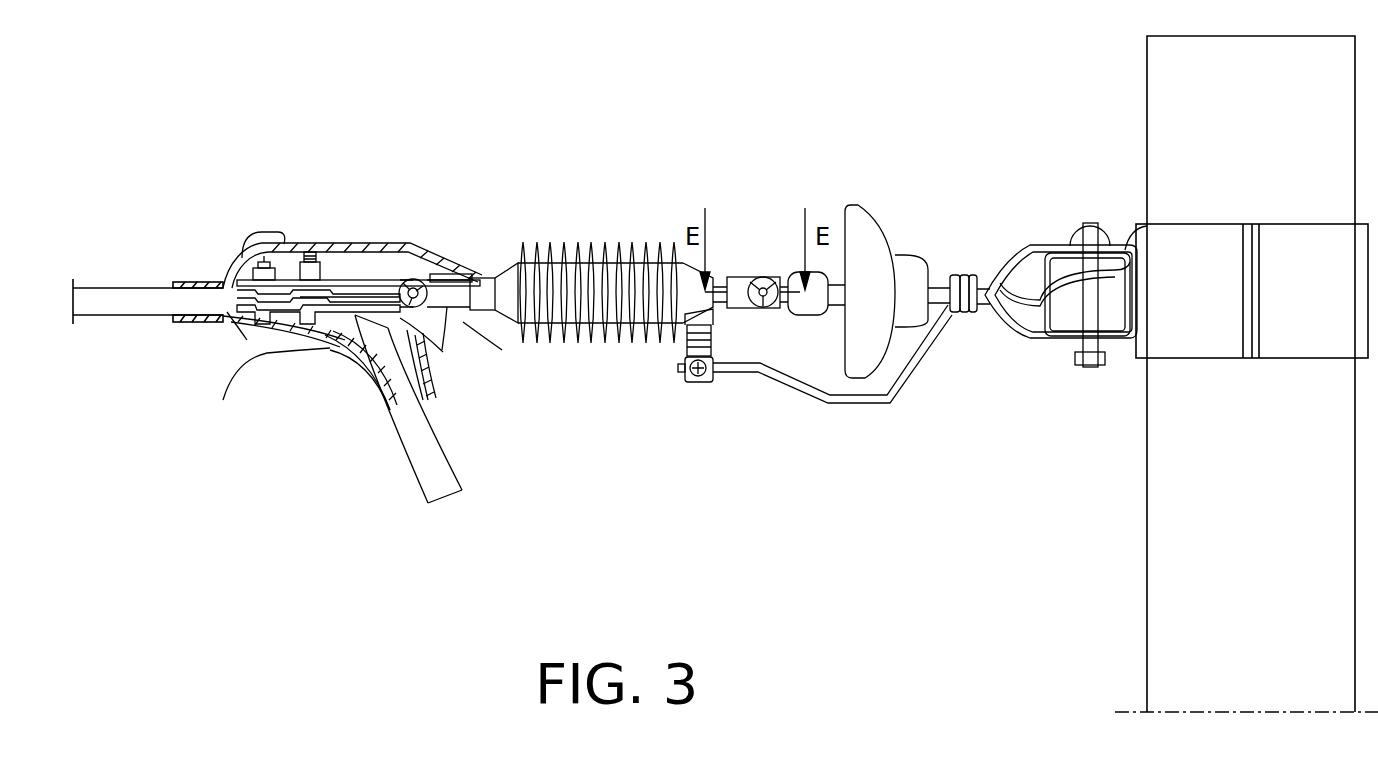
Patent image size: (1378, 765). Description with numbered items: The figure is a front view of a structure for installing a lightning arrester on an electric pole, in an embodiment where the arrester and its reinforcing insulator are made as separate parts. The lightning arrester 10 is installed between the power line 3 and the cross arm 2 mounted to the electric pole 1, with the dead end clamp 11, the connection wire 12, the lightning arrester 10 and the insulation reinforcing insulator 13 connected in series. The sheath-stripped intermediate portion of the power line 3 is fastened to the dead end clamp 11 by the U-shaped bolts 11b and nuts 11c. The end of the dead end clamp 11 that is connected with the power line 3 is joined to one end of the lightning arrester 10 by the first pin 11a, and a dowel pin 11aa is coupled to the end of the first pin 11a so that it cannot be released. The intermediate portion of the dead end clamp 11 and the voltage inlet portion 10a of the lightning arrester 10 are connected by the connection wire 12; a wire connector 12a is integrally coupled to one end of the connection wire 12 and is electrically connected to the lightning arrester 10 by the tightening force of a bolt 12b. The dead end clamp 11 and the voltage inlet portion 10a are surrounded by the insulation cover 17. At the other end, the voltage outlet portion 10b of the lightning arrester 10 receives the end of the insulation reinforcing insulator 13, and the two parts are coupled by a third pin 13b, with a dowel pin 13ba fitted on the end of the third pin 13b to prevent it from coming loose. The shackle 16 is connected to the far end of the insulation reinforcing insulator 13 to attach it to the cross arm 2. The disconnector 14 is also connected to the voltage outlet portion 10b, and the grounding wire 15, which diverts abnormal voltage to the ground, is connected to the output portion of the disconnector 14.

The electric pole 1 is at (1157, 642).
The cross arm 2 is at (1043, 338).
The power line 3 is at (444, 469).
The lightning arrester 10 is at (557, 270).
The voltage inlet portion 10a is at (458, 298).
The voltage outlet portion 10b is at (717, 316).
The dead end clamp 11 is at (238, 342).
The first pin 11a is at (437, 282).
The dowel pin 11aa is at (420, 310).
The U-shaped bolts 11b is at (270, 340).
The nuts 11c is at (242, 257).
The connection wire 12 is at (365, 268).
The wire connector 12a is at (334, 262).
The bolt 12b is at (468, 277).
The insulation reinforcing insulator 13 is at (862, 223).
The third pin 13b is at (764, 276).
The dowel pin 13ba is at (765, 290).
The disconnector 14 is at (688, 347).
The grounding wire 15 is at (800, 393).
The shackle 16 is at (1005, 338).
The insulation cover 17 is at (355, 365).